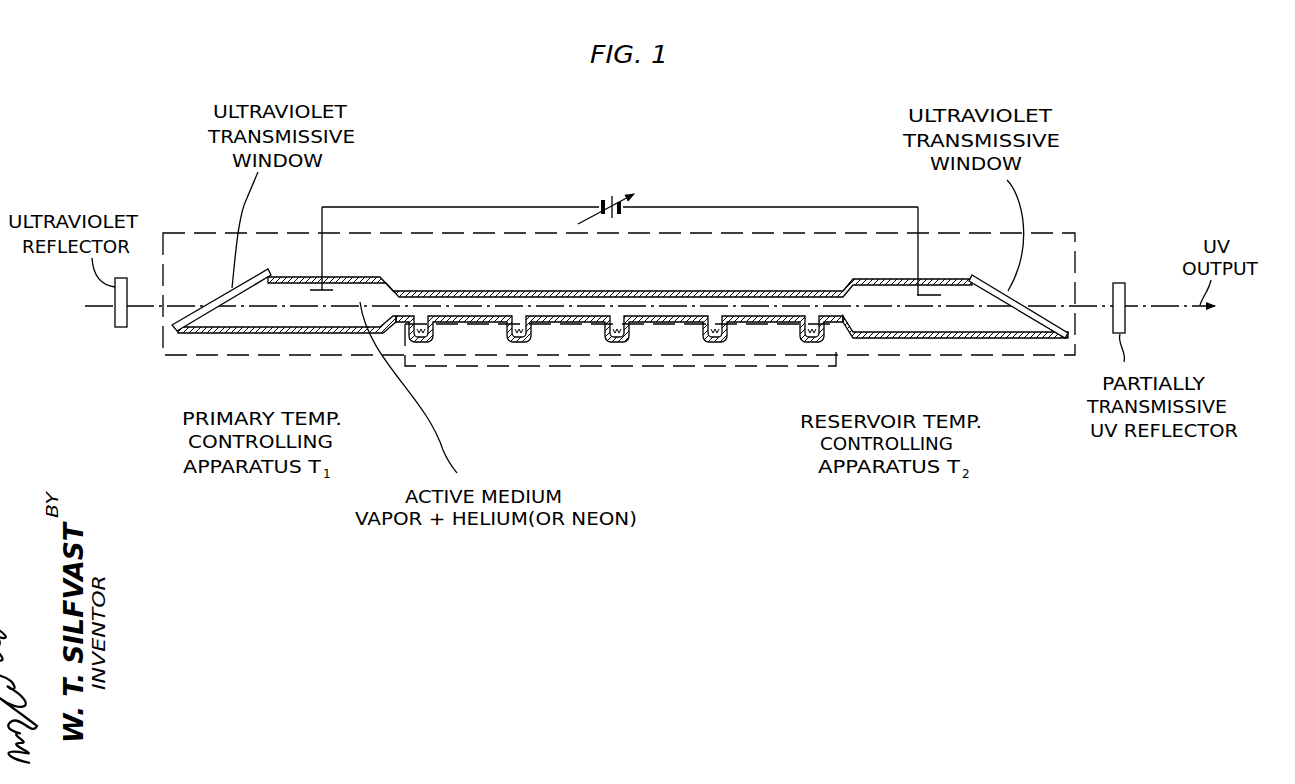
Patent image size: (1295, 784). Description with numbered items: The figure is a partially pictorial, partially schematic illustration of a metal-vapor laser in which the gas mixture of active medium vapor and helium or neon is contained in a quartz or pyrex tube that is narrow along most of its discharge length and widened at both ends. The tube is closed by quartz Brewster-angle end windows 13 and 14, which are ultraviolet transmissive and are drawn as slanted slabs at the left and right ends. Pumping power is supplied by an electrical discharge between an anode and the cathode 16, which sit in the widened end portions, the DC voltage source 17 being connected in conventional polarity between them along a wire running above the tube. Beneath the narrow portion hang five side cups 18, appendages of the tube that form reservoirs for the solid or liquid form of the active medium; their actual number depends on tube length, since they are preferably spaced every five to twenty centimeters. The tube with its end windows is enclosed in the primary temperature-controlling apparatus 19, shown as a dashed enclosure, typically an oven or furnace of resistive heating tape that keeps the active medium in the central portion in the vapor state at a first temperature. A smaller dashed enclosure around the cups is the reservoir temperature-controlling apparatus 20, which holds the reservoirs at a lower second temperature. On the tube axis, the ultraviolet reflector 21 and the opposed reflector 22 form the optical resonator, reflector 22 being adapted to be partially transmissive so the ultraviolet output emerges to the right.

The end window 13 is at (222, 293).
The end window 14 is at (985, 290).
The cathode 16 is at (928, 292).
The DC voltage source 17 is at (604, 198).
The side cups 18 is at (428, 343).
The primary temperature-controlling apparatus 19 is at (258, 356).
The reservoir temperature-controlling apparatus 20 is at (813, 368).
The ultraviolet reflector 21 is at (120, 328).
The partially transmissive ultraviolet reflector 22 is at (1118, 283).